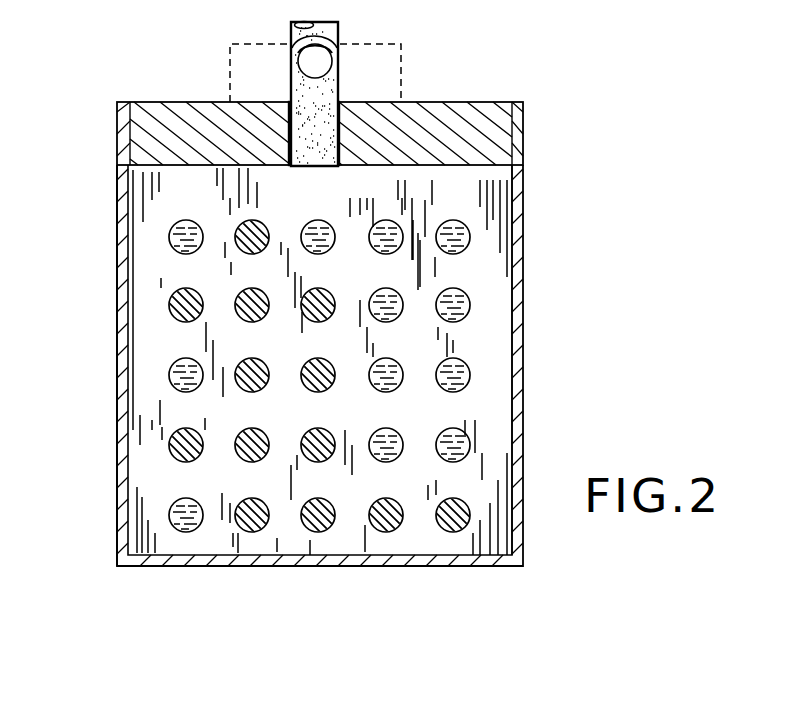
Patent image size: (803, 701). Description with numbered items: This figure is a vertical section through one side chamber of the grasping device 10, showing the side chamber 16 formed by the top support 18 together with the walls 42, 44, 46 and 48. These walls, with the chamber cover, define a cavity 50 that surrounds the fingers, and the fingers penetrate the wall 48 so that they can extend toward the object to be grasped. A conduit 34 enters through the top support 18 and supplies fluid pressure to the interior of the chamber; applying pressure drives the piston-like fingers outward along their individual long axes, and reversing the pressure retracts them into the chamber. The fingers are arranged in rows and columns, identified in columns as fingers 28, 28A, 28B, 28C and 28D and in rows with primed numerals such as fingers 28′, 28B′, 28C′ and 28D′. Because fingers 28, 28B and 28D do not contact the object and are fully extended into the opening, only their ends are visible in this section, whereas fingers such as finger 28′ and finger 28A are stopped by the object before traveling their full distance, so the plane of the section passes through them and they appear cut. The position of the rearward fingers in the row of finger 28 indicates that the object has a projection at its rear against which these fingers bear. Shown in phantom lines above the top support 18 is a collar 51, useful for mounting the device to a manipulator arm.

The device 10 is at (574, 148).
The side chamber 16 is at (117, 165).
The top support 18 is at (469, 100).
The conduit 34 is at (338, 33).
The wall 42 is at (117, 192).
The wall 44 is at (523, 164).
The wall 46 is at (480, 565).
The wall 48 is at (326, 353).
The cavity 50 is at (513, 297).
The collar 51 is at (401, 60).
The finger 28 is at (170, 512).
The finger 28′ is at (240, 529).
The finger 28A is at (170, 454).
The finger 28B is at (170, 384).
The finger 28B′ is at (238, 394).
The finger 28C is at (171, 299).
The finger 28C′ is at (240, 318).
The finger 28D is at (169, 237).
The finger 28D′ is at (240, 250).